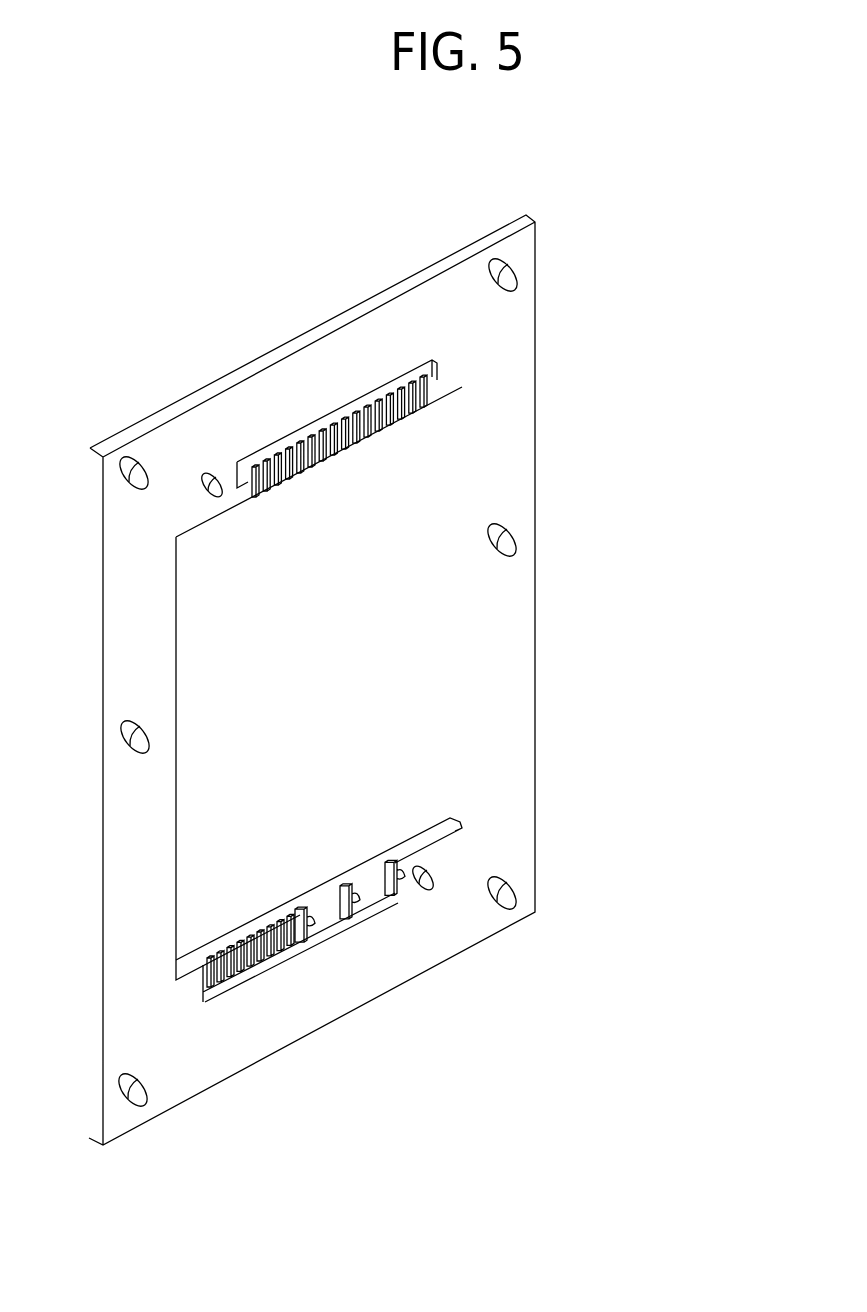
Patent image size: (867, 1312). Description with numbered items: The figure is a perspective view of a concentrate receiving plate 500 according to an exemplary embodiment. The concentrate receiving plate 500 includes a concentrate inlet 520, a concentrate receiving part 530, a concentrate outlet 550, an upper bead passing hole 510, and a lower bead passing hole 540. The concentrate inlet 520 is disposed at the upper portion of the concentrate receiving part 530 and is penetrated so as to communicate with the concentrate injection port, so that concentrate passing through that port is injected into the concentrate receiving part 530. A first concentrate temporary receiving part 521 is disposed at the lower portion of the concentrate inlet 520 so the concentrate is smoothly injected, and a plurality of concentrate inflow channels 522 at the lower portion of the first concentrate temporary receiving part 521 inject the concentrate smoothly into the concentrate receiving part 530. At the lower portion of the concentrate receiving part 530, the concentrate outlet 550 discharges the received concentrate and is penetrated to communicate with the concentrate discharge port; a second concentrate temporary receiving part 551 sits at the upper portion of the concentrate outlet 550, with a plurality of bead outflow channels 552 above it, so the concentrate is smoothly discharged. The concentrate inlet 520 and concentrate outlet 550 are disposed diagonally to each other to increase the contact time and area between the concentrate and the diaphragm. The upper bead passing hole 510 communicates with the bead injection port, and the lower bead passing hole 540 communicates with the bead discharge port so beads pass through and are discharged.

The concentrate receiving plate 500 is at (297, 222).
The upper bead passing hole 510 is at (209, 473).
The concentrate inlet 520 is at (431, 341).
The first concentrate temporary receiving part 521 is at (313, 403).
The concentrate inflow channels 522 is at (436, 402).
The concentrate receiving part 530 is at (405, 705).
The lower bead passing hole 540 is at (417, 892).
The concentrate outlet 550 is at (319, 979).
The second concentrate temporary receiving part 551 is at (300, 950).
The bead outflow channels 552 is at (347, 930).